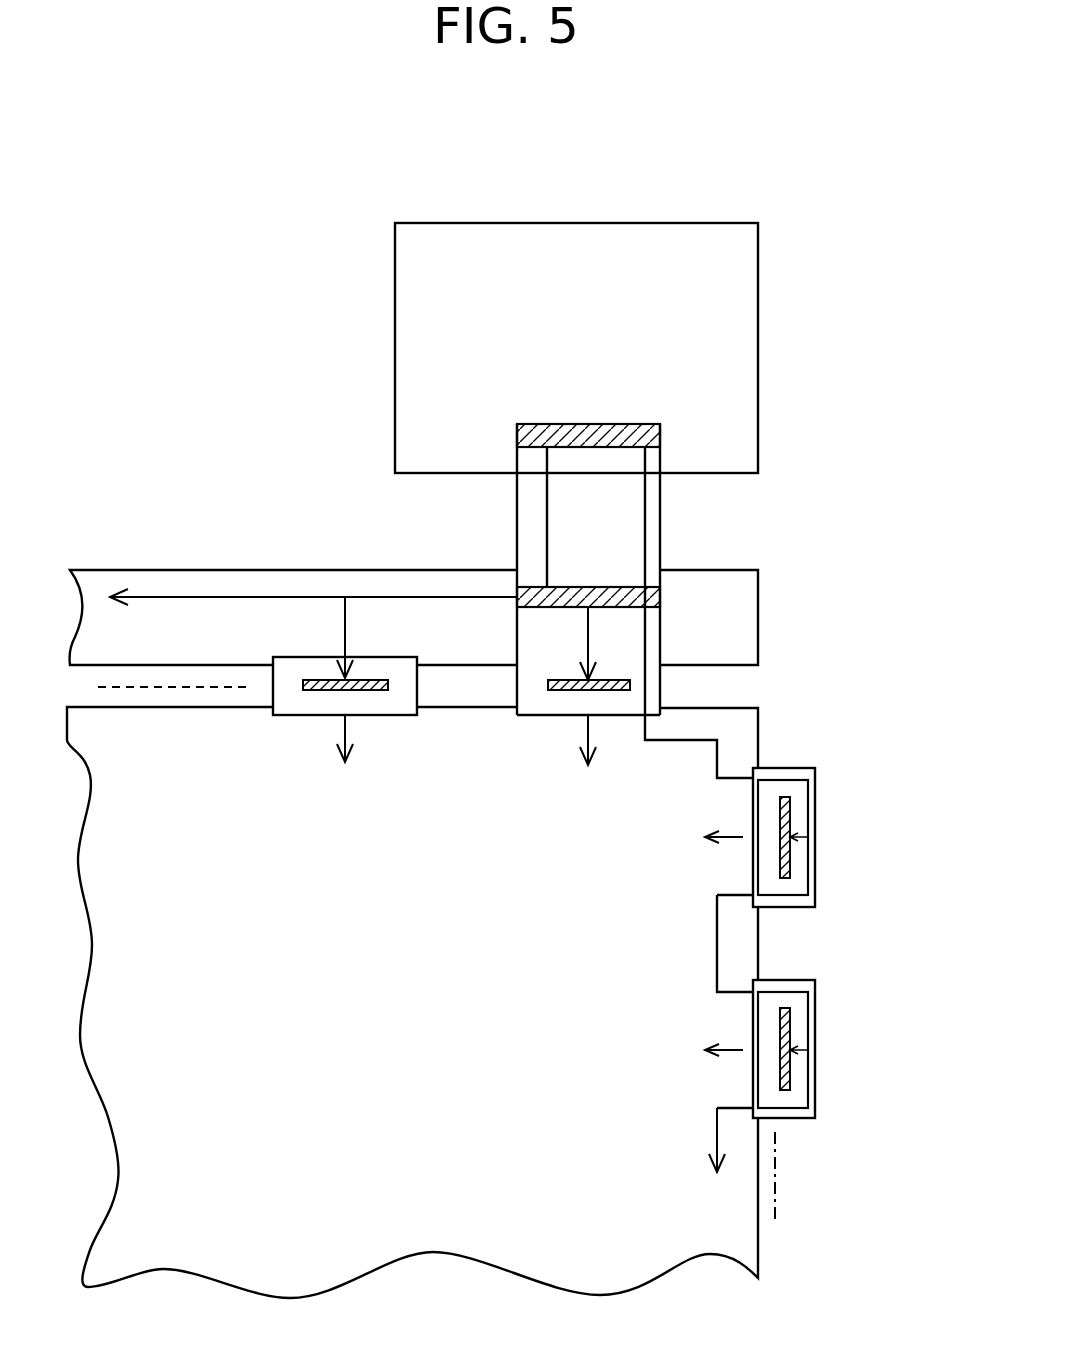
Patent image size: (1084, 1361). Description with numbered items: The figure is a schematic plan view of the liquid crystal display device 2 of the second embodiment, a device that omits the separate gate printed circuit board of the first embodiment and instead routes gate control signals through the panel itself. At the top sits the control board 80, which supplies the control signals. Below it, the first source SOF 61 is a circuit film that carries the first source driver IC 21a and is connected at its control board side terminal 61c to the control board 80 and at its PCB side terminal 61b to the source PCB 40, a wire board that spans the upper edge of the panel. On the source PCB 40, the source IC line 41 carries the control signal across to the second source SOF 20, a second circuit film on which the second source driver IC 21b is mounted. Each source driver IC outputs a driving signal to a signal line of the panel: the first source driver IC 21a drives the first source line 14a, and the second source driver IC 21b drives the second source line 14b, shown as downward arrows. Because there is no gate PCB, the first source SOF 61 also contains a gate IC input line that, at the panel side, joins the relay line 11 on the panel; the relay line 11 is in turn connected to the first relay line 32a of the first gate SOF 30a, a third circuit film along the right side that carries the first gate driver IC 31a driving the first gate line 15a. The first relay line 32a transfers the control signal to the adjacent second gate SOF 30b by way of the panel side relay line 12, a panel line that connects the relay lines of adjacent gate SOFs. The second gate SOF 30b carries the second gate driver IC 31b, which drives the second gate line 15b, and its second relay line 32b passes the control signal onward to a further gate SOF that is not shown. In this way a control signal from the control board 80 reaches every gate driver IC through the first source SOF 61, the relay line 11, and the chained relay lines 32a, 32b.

The liquid crystal display device 2 is at (167, 437).
The control board 80 is at (550, 240).
The source PCB 40 is at (464, 582).
The source IC line 41 is at (260, 597).
The first source SOF 61 is at (600, 583).
The PCB side terminal 61b is at (660, 597).
The control board side terminal 61c is at (592, 433).
The first source driver IC 21a is at (550, 683).
The second source driver IC 21b is at (300, 685).
The second source SOF 20 is at (303, 716).
The first source line 14a is at (590, 735).
The second source line 14b is at (350, 737).
The relay line 11 is at (465, 992).
The panel side relay line 12 is at (718, 948).
The first gate SOF 30a is at (780, 837).
The second gate SOF 30b is at (781, 1049).
The first gate driver IC 31a is at (790, 865).
The second gate driver IC 31b is at (790, 1017).
The first relay line 32a is at (808, 795).
The second relay line 32b is at (808, 1087).
The first gate line 15a is at (730, 840).
The second gate line 15b is at (730, 1052).